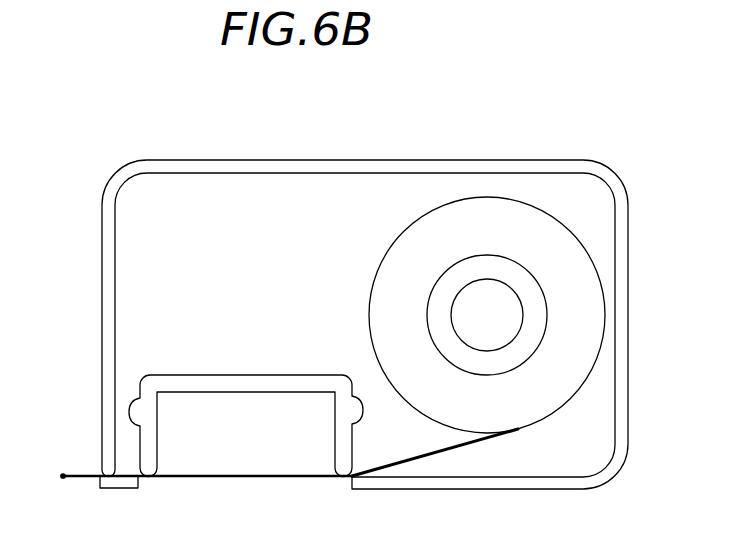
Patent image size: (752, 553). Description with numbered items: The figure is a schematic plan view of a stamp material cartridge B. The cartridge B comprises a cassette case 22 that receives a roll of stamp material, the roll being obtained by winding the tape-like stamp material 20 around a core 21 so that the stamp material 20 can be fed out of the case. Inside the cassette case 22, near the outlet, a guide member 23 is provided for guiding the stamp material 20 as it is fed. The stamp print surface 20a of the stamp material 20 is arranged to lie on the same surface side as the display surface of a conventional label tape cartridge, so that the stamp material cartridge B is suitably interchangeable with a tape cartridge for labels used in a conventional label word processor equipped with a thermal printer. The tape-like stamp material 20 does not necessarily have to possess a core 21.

The stamp material cartridge B is at (372, 141).
The tape-like stamp material 20 is at (437, 456).
The stamp print surface 20a is at (63, 475).
The core 21 is at (497, 285).
The cassette case 22 is at (627, 396).
The guide member 23 is at (153, 378).